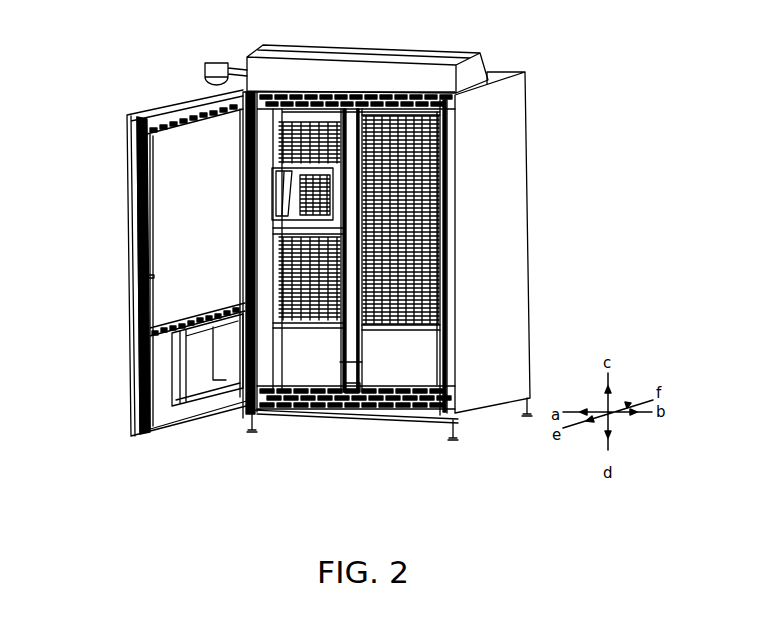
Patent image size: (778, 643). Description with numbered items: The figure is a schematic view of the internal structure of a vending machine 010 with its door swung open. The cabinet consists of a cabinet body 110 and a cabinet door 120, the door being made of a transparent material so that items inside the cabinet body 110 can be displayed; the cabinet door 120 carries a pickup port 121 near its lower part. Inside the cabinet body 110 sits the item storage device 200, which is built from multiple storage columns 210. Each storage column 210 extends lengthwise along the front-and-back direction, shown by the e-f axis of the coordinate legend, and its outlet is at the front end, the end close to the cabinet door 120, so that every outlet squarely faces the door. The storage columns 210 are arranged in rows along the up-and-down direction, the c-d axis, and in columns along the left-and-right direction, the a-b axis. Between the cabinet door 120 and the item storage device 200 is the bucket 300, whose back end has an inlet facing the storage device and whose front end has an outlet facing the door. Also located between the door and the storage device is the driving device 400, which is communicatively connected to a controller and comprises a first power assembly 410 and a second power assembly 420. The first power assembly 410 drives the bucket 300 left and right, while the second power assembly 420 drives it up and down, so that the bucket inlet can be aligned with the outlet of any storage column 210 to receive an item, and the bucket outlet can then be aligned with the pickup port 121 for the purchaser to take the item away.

The vending machine 010 is at (392, 37).
The cabinet body 110 is at (488, 77).
The cabinet door 120 is at (131, 177).
The pickup port 121 is at (195, 365).
The item storage device 200 is at (440, 118).
The storage column 210 is at (443, 288).
The bucket 300 is at (278, 196).
The driving device 400 is at (393, 483).
The first power assembly 410 is at (327, 387).
The second power assembly 420 is at (358, 364).